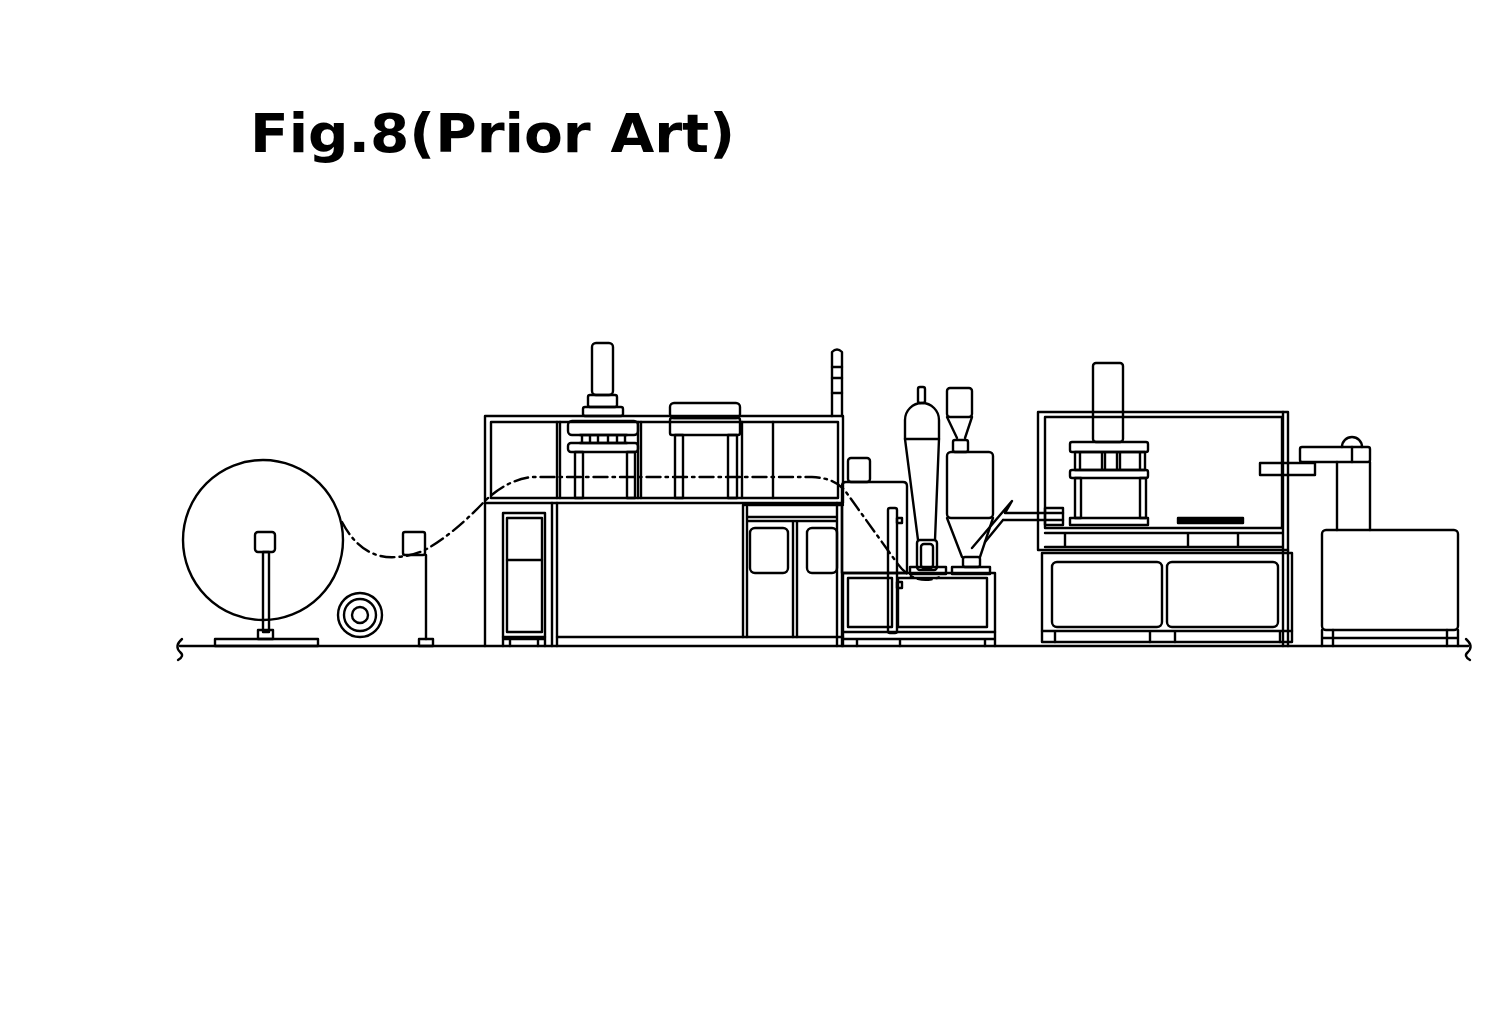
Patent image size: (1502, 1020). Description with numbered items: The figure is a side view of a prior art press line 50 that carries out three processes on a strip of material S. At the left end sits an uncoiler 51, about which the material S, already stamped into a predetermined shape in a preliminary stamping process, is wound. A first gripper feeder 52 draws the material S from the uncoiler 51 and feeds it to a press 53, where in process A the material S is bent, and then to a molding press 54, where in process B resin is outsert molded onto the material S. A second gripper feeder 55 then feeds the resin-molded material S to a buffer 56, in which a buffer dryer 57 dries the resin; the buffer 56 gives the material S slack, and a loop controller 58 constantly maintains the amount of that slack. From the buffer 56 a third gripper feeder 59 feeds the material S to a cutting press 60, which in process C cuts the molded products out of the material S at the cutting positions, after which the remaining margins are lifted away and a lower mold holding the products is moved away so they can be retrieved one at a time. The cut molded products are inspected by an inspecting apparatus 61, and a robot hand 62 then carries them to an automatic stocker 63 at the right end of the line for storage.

The press line 50 is at (939, 164).
The uncoiler 51 is at (268, 461).
The material S is at (452, 530).
The first gripper feeder 52 is at (513, 430).
The press 53 is at (605, 494).
The molding press 54 is at (702, 494).
The second gripper feeder 55 is at (803, 427).
The buffer 56 is at (941, 355).
The buffer dryer 57 is at (905, 432).
The loop controller 58 is at (898, 607).
The third gripper feeder 59 is at (1022, 513).
The cutting press 60 is at (1148, 444).
The inspecting apparatus 61 is at (1212, 518).
The robot hand 62 is at (1323, 445).
The automatic stocker 63 is at (1417, 537).
The process A is at (586, 330).
The process B is at (717, 378).
The process C is at (1140, 343).